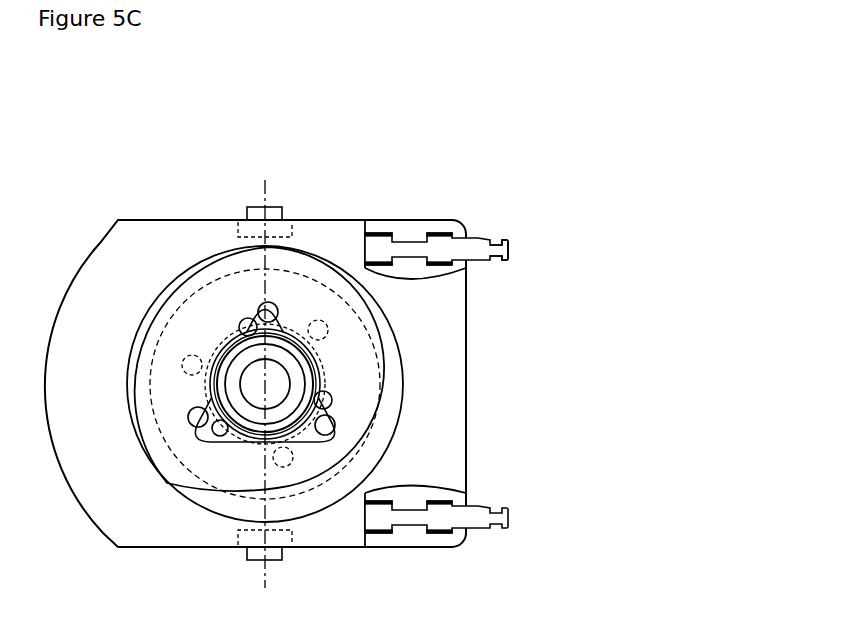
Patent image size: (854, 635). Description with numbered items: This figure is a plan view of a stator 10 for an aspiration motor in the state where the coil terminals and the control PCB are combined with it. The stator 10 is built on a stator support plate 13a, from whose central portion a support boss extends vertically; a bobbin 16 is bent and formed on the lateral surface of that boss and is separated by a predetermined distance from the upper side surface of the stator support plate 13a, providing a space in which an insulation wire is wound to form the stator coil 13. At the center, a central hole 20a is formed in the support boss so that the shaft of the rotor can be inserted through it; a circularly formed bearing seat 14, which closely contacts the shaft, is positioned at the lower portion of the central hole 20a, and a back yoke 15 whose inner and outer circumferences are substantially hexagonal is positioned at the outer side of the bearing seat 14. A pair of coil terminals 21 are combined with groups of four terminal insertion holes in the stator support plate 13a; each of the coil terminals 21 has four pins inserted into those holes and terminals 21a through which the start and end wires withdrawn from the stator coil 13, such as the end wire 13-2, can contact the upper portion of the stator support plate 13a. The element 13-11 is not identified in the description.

The stator 10 is at (378, 361).
The stator coil 13 is at (390, 370).
The stator support plate 13a is at (452, 325).
The upper fixing bracket 13-11 is at (400, 278).
The end wire 13-2 is at (361, 494).
The bearing seat 14 is at (273, 398).
The back yoke 15 is at (203, 465).
The bobbin 16 is at (162, 460).
The central hole 20a is at (243, 440).
The coil terminals 21 is at (498, 177).
The terminals 21a is at (506, 248).